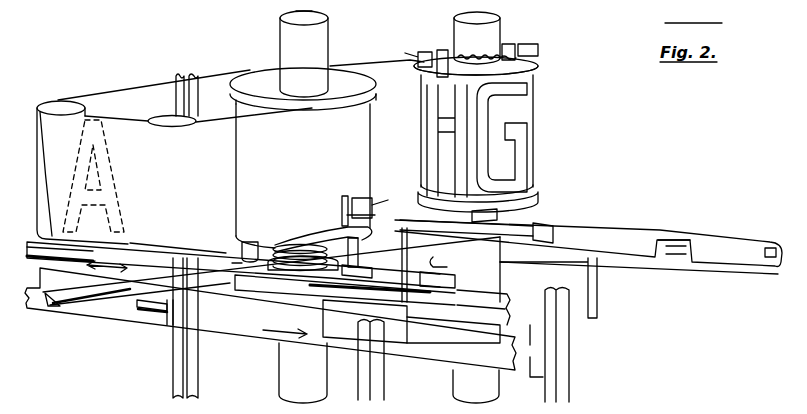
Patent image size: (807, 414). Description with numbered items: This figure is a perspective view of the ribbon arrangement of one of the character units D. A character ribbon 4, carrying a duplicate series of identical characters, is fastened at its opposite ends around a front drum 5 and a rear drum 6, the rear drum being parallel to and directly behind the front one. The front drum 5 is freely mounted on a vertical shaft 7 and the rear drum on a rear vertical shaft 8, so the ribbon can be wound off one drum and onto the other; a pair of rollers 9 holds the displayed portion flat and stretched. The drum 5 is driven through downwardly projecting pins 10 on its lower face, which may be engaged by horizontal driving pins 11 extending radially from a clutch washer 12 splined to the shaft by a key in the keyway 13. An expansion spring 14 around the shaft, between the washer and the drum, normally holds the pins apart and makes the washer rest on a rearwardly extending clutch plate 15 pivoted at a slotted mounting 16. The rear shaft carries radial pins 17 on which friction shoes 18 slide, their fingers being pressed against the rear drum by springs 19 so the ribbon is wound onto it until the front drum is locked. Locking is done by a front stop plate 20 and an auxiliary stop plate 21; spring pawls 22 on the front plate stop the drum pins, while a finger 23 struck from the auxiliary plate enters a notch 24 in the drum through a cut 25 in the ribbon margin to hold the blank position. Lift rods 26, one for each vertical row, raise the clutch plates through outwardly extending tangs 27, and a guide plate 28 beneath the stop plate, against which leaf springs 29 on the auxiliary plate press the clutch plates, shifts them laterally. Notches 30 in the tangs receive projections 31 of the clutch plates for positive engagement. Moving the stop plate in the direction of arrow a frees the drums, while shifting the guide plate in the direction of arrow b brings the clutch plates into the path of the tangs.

The character unit D is at (245, 60).
The character ribbon 4 is at (127, 95).
The front drum 5 is at (366, 84).
The rear drum 6 is at (540, 200).
The vertical shaft 7 is at (303, 207).
The rear vertical shaft 8 is at (455, 30).
The rollers 9 is at (55, 112).
The drum pins 10 is at (248, 240).
The horizontal driving pins 11 is at (373, 262).
The clutch washer 12 is at (286, 241).
The keyway 13 is at (322, 18).
The expansion spring 14 is at (334, 242).
The clutch plate 15 is at (633, 235).
The pivotal mounting 16 is at (766, 260).
The radial pins 17 is at (538, 50).
The friction shoes 18 is at (536, 62).
The springs 19 is at (485, 54).
The front stop plate 20 is at (505, 308).
The auxiliary stop plate 21 is at (678, 280).
The spring pawl 22 is at (226, 248).
The finger 23 is at (553, 234).
The notch 24 is at (346, 196).
The cut 25 is at (346, 206).
The lift rod 26 is at (176, 378).
The tang 27 is at (158, 327).
The guide plate 28 is at (270, 319).
The leaf springs 29 is at (450, 248).
The notches 30 is at (163, 303).
The projections 31 is at (152, 296).
The arrow a is at (107, 256).
The arrow b is at (285, 325).